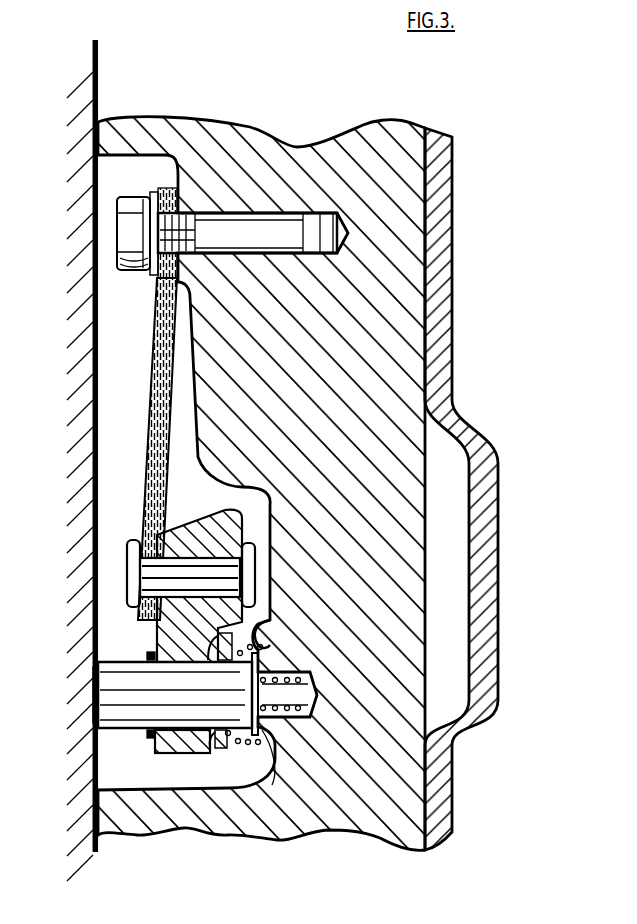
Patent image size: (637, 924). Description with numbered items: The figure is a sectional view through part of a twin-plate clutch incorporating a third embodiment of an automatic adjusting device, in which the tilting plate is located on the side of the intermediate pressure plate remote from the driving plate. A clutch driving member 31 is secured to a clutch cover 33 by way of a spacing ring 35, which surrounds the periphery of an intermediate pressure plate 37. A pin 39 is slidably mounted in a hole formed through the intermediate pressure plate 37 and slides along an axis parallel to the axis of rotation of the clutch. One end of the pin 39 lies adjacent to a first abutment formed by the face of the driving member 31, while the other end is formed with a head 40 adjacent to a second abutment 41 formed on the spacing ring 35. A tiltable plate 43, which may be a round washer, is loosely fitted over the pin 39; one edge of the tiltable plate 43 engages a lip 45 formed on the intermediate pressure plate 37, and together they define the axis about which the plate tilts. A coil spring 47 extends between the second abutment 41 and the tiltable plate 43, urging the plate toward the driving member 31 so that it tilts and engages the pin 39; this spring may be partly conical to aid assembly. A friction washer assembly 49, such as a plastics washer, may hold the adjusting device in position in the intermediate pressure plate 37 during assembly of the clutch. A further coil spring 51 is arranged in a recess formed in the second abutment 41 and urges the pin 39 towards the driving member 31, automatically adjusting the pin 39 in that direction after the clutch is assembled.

The clutch driving member 31 is at (37, 314).
The clutch cover 33 is at (482, 442).
The spacing ring 35 is at (285, 134).
The intermediate pressure plate 37 is at (167, 755).
The pin 39 is at (112, 697).
The head 40 is at (272, 760).
The second abutment 41 is at (268, 617).
The tiltable plate 43 is at (220, 750).
The lip 45 is at (206, 630).
The coil spring 47 is at (240, 745).
The friction washer assembly 49 is at (145, 738).
The coil spring 51 is at (298, 720).